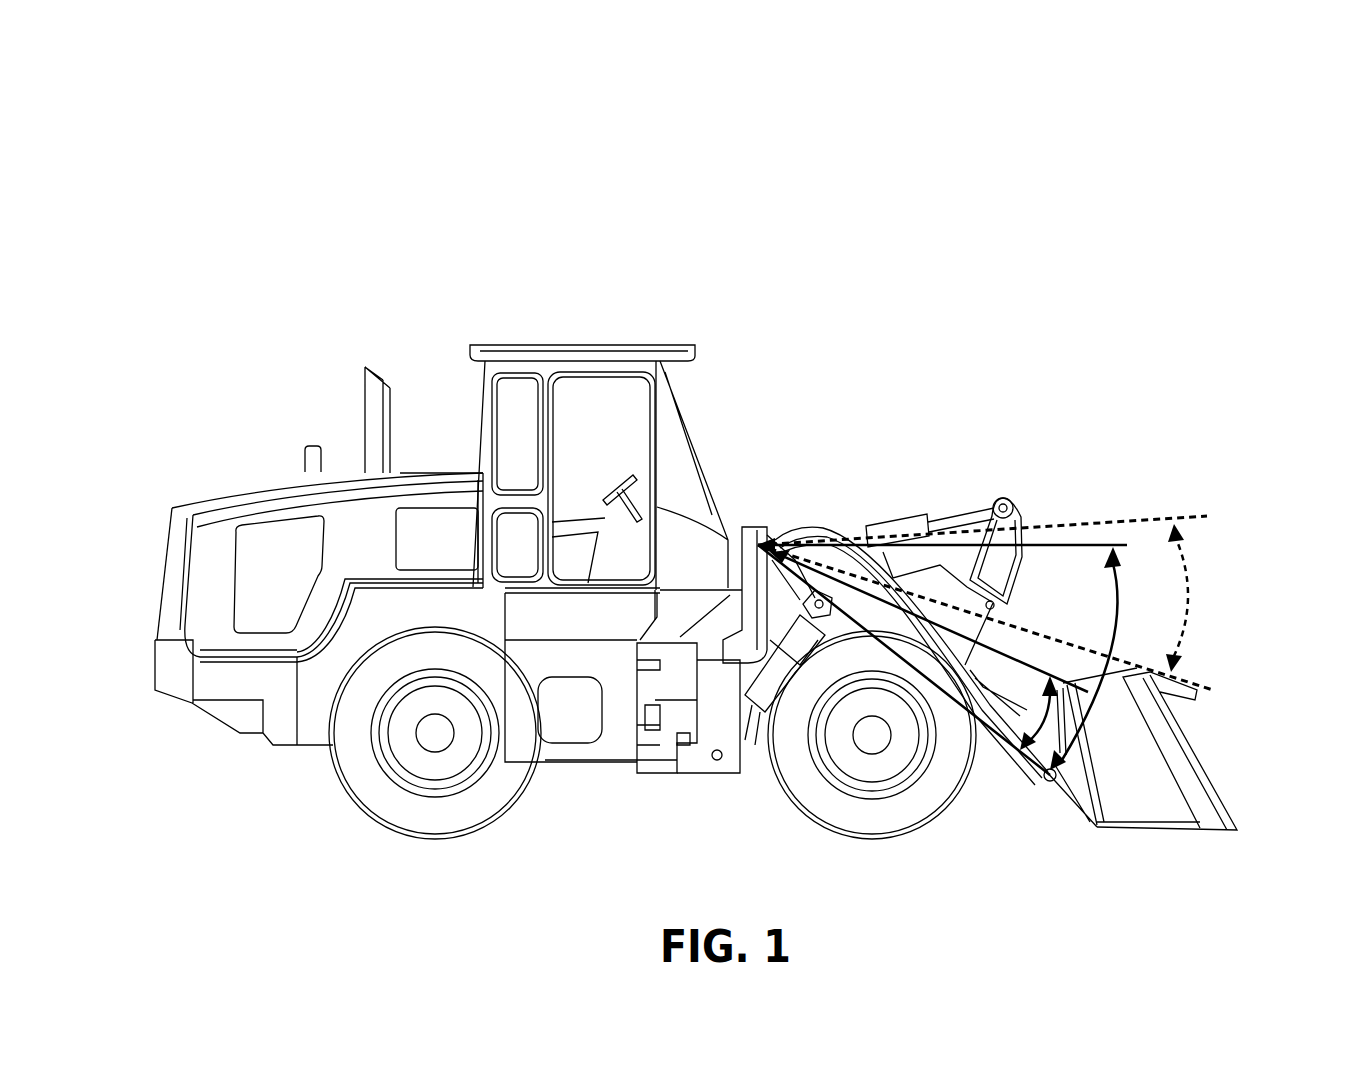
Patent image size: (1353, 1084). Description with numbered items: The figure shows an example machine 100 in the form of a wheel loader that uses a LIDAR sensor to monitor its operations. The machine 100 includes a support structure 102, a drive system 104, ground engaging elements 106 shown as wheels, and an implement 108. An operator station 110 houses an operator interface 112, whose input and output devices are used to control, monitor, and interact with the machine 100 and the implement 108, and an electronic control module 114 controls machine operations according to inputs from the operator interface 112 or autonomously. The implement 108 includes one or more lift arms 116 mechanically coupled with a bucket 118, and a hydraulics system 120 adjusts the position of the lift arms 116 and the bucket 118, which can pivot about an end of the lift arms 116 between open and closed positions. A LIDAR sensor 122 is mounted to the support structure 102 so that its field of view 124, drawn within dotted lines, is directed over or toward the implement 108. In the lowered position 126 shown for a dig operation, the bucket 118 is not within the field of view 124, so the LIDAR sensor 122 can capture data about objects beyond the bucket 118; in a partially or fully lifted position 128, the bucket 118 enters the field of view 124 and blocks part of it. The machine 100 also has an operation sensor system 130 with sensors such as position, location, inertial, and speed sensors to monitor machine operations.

The machine 100 is at (215, 64).
The support structure 102 is at (280, 760).
The drive system 104 is at (667, 710).
The ground engaging elements 106 is at (377, 798).
The implement 108 is at (1170, 462).
The operator station 110 is at (668, 320).
The operator interface 112 is at (643, 520).
The electronic control module 114 is at (448, 525).
The lift arms 116 is at (797, 530).
The bucket 118 is at (1175, 792).
The hydraulics system 120 is at (913, 527).
The LIDAR sensor 122 is at (784, 545).
The field of view 124 is at (999, 603).
The lowered position 126 is at (1030, 778).
The lifted position 128 is at (1042, 672).
The operation sensor system 130 is at (745, 578).